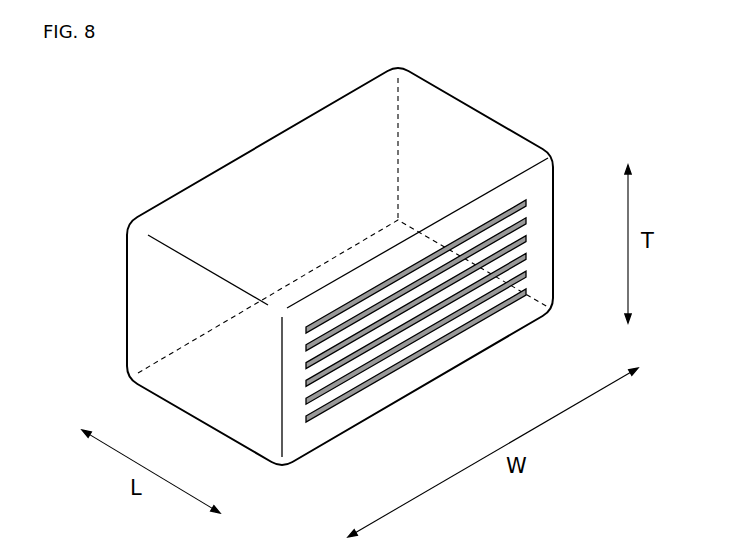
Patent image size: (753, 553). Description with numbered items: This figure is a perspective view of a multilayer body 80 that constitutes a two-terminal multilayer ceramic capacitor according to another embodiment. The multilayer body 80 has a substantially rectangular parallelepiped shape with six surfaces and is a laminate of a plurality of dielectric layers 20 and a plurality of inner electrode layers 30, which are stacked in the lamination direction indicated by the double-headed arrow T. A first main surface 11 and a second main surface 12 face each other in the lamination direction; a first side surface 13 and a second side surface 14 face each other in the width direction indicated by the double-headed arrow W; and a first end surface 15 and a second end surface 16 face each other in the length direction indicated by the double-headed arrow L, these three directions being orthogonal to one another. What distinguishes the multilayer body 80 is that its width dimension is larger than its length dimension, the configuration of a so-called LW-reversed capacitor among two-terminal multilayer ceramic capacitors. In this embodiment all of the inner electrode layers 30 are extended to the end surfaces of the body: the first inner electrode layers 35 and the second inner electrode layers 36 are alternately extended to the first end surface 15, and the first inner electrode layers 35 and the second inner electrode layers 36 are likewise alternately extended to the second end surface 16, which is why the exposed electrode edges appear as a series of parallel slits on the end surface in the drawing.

The first main surface 11 is at (433, 112).
The second main surface 12 is at (267, 418).
The first side surface 13 is at (172, 375).
The second side surface 14 is at (482, 147).
The first end surface 15 is at (260, 178).
The second end surface 16 is at (517, 315).
The dielectric layers 20 is at (358, 363).
The inner electrode layers 30 is at (443, 311).
The first inner electrode layers 35 is at (432, 330).
The second inner electrode layers 36 is at (402, 363).
The multilayer body 80 is at (583, 148).